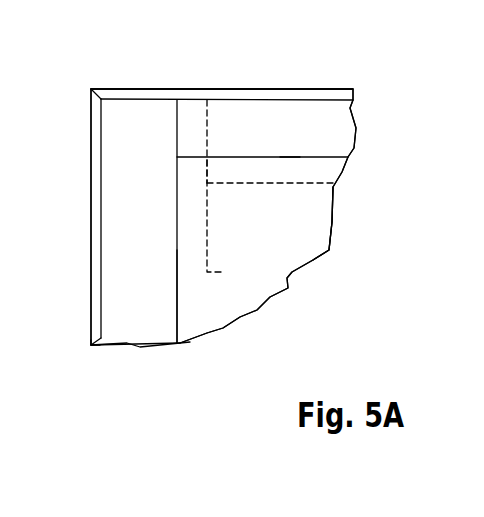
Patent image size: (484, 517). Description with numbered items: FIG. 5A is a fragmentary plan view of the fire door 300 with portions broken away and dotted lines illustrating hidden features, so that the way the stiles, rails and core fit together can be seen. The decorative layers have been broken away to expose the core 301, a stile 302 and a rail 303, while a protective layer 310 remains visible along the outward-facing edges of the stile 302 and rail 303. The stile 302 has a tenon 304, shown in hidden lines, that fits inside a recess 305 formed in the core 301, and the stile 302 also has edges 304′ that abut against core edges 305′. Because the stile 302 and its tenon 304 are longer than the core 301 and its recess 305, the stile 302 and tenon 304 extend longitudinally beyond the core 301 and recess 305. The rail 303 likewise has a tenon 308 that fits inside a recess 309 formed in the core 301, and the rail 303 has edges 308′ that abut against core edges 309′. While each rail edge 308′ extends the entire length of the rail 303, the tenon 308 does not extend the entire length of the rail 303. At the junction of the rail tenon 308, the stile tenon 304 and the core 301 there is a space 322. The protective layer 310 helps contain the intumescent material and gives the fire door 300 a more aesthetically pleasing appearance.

The fire door 300 is at (180, 407).
The core 301 is at (270, 263).
The stile 302 is at (120, 242).
The rail 303 is at (322, 117).
The tenon 304 is at (187, 307).
The edge 304′ is at (177, 288).
The recess 305 is at (225, 275).
The core edge 305′ is at (183, 188).
The tenon 308 is at (325, 170).
The edge 308′ is at (238, 157).
The recess 309 is at (273, 190).
The core edge 309′ is at (290, 158).
The protective layer 310 is at (300, 92).
The space 322 is at (213, 178).